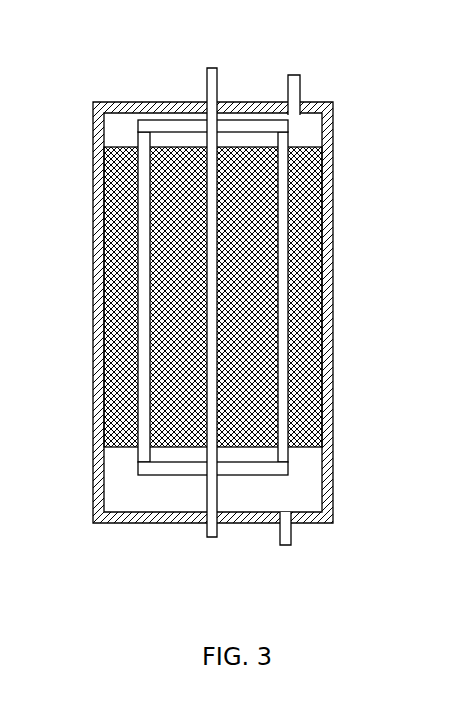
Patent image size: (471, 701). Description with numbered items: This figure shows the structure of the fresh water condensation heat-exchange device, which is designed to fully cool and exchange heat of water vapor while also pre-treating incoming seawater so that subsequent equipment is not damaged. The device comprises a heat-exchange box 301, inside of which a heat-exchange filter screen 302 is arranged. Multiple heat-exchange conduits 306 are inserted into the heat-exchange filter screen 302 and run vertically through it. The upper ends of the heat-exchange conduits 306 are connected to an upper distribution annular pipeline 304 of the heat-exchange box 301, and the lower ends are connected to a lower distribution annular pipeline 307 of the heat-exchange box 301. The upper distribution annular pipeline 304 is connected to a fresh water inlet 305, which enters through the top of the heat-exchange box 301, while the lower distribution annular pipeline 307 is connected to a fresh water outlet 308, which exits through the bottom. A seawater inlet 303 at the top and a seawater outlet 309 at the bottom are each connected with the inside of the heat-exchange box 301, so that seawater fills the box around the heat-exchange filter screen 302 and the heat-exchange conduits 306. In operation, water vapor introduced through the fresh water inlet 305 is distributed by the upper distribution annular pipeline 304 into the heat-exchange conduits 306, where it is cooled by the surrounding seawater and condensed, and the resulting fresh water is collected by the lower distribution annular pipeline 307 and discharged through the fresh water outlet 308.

The heat-exchange box 301 is at (333, 402).
The heat-exchange filter screen 302 is at (322, 234).
The seawater inlet 303 is at (298, 80).
The upper distribution annular pipeline 304 is at (157, 125).
The fresh water inlet 305 is at (217, 82).
The heat-exchange conduits 306 is at (139, 351).
The lower distribution annular pipeline 307 is at (167, 470).
The fresh water outlet 308 is at (212, 522).
The seawater outlet 309 is at (288, 522).